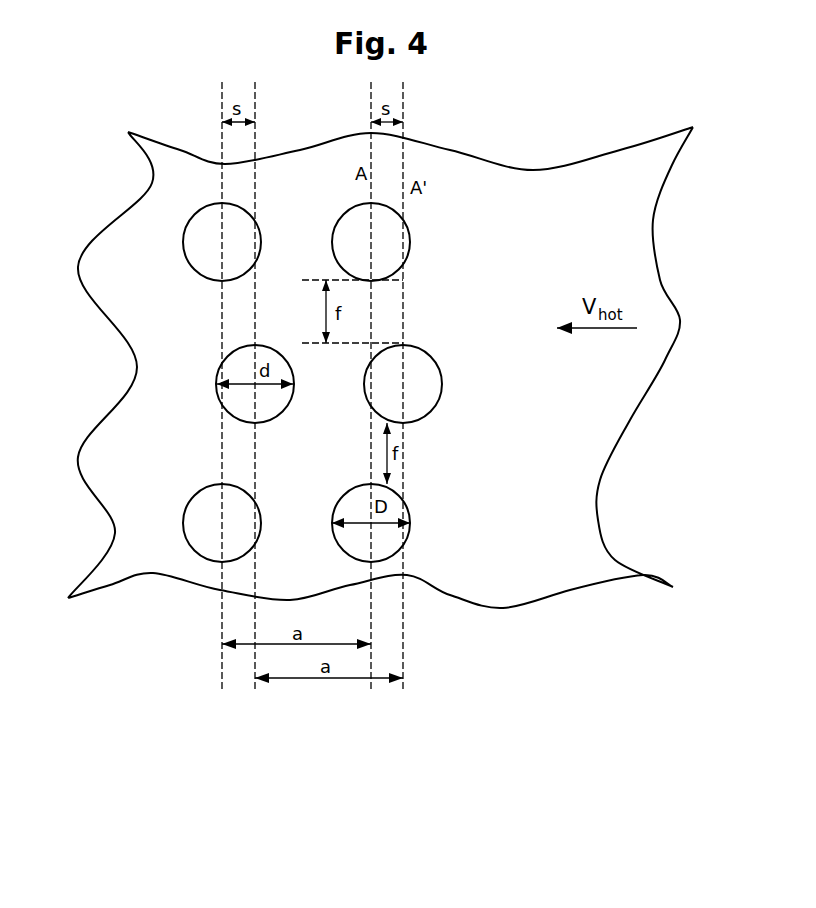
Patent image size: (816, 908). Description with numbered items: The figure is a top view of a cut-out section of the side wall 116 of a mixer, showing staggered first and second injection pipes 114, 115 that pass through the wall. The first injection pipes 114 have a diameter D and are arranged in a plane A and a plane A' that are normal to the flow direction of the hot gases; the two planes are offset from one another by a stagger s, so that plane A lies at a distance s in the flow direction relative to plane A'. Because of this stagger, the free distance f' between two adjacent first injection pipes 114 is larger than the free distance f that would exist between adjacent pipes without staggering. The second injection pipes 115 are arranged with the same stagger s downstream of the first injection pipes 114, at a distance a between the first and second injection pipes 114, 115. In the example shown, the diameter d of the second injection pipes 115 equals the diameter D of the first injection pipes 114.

The first injection pipes 114 is at (409, 243).
The second injection pipes 115 is at (185, 242).
The side wall 116 is at (475, 552).